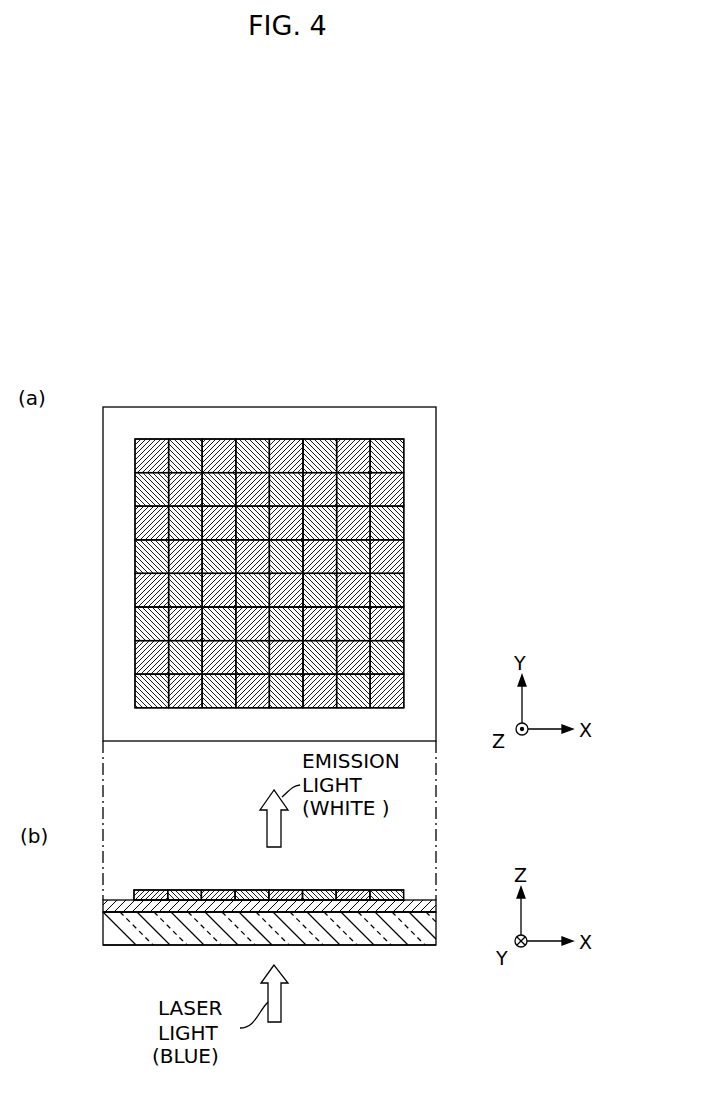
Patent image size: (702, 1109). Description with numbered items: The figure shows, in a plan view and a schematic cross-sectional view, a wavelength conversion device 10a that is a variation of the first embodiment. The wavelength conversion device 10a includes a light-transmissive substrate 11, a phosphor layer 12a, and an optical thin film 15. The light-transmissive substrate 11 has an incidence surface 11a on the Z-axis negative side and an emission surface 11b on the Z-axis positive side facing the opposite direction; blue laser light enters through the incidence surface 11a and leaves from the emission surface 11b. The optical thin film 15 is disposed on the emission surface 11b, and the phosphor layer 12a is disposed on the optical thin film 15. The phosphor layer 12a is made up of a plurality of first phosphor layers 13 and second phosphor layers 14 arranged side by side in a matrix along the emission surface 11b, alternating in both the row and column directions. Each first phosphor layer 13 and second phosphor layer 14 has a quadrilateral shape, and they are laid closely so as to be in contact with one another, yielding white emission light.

The wavelength conversion device 10a is at (441, 375).
The light-transmissive substrate 11 is at (437, 490).
The incidence surface 11a is at (415, 949).
The emission surface 11b is at (417, 906).
The phosphor layer 12a is at (269, 615).
The first phosphor layer 13 is at (153, 448).
The second phosphor layer 14 is at (185, 448).
The optical thin film 15 is at (420, 431).